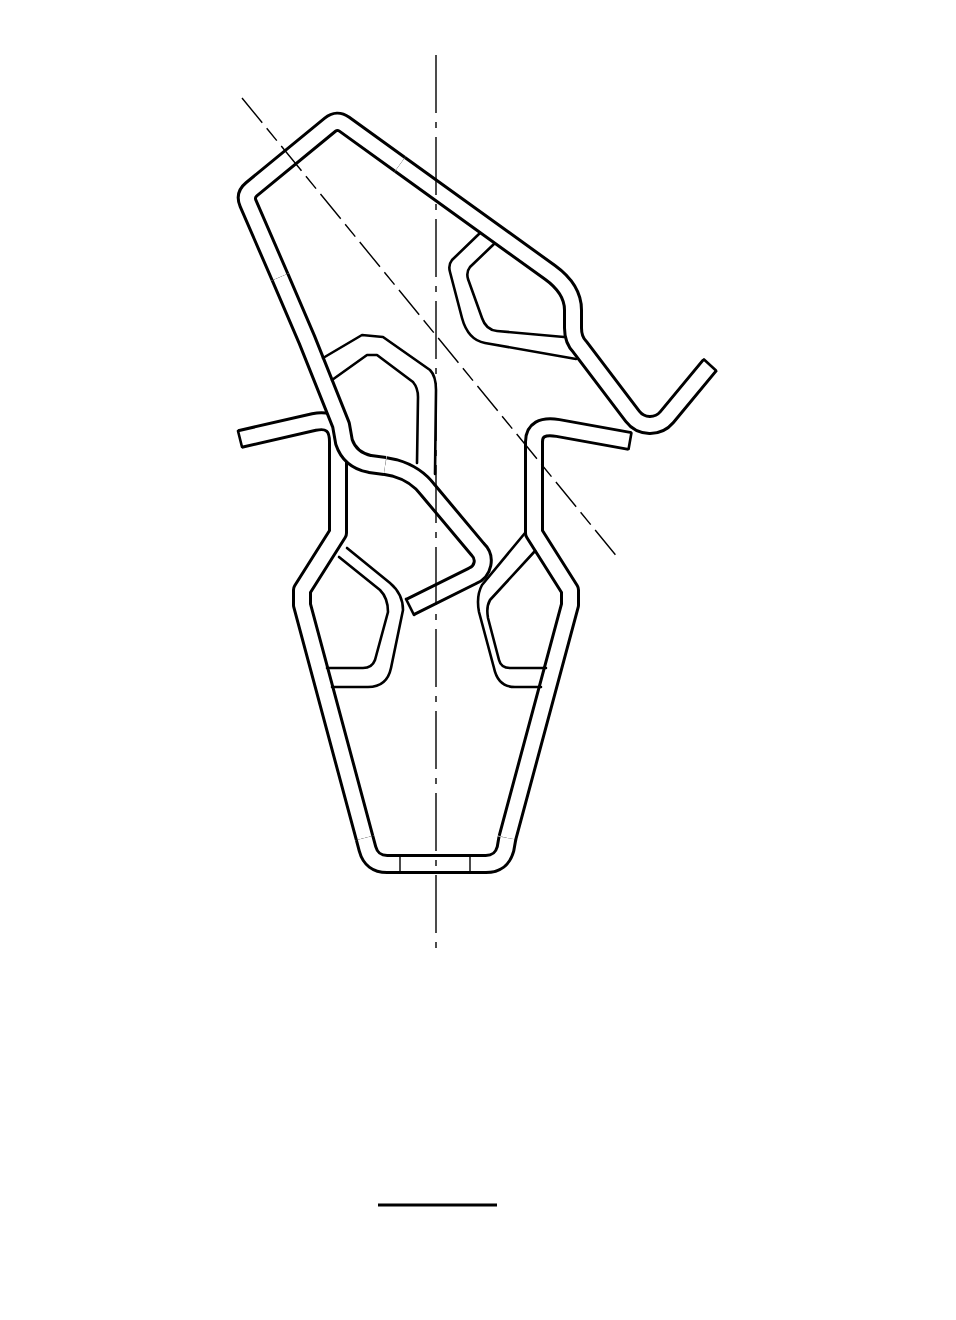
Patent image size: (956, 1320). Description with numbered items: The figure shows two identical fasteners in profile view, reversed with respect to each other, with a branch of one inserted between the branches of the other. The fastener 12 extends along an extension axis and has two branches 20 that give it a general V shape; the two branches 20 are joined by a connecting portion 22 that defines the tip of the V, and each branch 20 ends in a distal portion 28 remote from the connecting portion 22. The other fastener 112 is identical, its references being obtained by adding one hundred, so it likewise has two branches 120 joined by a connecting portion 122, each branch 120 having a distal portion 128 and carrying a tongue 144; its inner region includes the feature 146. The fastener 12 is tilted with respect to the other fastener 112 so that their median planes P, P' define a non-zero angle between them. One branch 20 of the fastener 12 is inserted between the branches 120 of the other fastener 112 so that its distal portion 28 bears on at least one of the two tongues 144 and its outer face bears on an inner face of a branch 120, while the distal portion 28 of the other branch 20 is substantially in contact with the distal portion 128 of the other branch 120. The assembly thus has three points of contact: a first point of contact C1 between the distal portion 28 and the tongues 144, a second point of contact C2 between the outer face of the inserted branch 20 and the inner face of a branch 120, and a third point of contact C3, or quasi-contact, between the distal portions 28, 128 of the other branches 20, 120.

The fastener 12 is at (548, 144).
The branch 20 is at (562, 217).
The connecting portion 22 is at (304, 148).
The distal portion 28 is at (662, 348).
The other fastener 112 is at (335, 880).
The branch of the other fastener 120 is at (316, 815).
The connecting portion of the other fastener 122 is at (458, 866).
The distal portion of the other fastener 128 is at (273, 478).
The tongue 144 is at (388, 638).
The slot 146 is at (447, 620).
The first point of contact C1 is at (487, 607).
The second point of contact C2 is at (307, 413).
The third point of contact C3 is at (633, 442).
The median plane P is at (444, 328).
The median plane of the other fastener P' is at (461, 499).